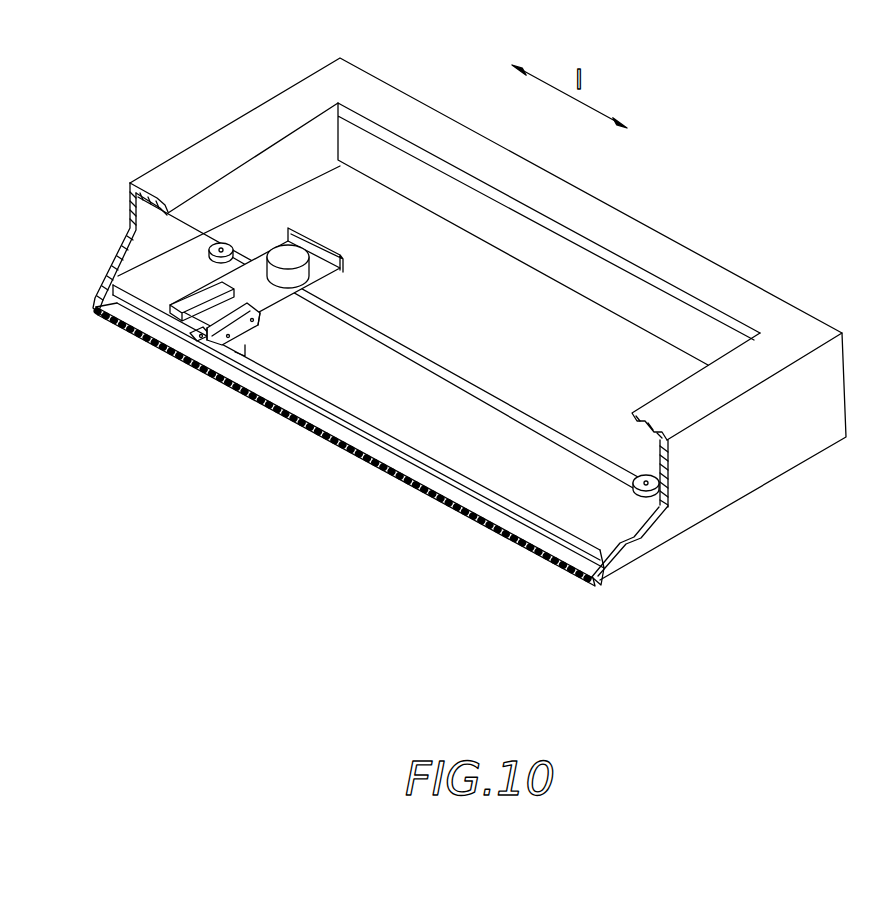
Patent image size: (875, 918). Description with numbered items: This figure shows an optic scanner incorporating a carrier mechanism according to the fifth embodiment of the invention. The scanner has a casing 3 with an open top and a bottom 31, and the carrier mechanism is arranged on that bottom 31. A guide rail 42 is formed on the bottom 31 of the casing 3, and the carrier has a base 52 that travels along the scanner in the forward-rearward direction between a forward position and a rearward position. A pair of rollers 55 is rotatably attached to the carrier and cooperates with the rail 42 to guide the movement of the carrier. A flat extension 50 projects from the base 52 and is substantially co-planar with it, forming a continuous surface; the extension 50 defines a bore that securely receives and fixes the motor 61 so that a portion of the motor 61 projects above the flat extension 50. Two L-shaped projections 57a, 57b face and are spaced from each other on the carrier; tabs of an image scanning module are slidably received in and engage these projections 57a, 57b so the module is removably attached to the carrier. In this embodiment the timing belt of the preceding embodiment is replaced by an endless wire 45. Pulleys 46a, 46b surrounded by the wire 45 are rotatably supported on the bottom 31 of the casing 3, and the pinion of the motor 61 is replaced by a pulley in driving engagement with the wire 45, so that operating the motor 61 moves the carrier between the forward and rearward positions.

The casing 3 is at (788, 443).
The bottom 31 is at (662, 375).
The guide rail 42 is at (320, 433).
The endless wire 45 is at (453, 388).
The pulley 46a is at (643, 491).
The pulley 46b is at (220, 243).
The flat extension 50 is at (260, 280).
The base 52 is at (212, 310).
The rollers 55 is at (195, 338).
The L-shaped projection 57a is at (180, 313).
The L-shaped projection 57b is at (208, 348).
The motor 61 is at (283, 247).